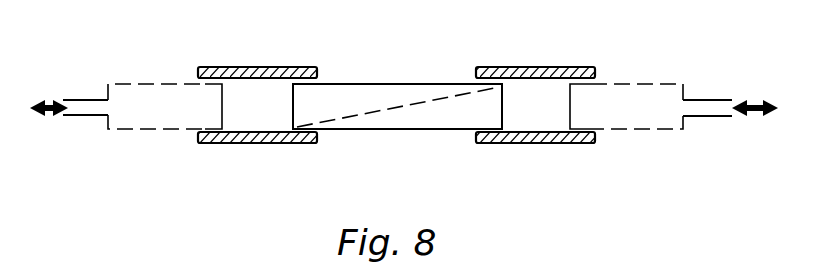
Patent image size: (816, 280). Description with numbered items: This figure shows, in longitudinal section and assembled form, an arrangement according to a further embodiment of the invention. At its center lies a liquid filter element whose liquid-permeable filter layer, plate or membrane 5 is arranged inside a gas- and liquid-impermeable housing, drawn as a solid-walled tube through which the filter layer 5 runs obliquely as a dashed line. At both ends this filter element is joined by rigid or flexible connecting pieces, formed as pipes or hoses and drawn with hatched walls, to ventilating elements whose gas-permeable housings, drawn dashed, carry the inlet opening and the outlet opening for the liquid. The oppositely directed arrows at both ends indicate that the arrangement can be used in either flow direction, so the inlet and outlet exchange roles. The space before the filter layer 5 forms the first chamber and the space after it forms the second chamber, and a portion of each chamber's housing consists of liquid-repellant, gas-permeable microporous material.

The filter layer 5 is at (403, 105).